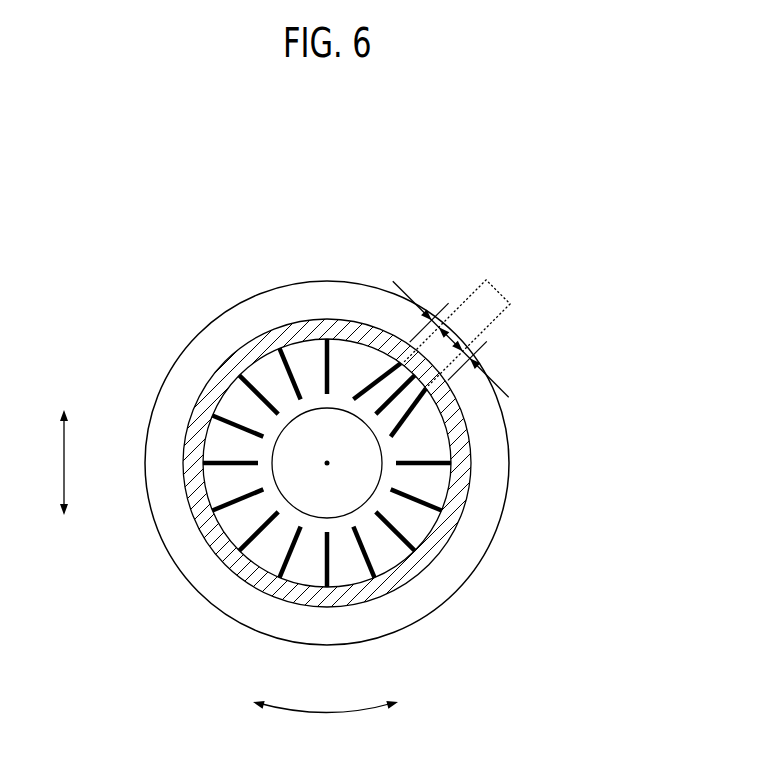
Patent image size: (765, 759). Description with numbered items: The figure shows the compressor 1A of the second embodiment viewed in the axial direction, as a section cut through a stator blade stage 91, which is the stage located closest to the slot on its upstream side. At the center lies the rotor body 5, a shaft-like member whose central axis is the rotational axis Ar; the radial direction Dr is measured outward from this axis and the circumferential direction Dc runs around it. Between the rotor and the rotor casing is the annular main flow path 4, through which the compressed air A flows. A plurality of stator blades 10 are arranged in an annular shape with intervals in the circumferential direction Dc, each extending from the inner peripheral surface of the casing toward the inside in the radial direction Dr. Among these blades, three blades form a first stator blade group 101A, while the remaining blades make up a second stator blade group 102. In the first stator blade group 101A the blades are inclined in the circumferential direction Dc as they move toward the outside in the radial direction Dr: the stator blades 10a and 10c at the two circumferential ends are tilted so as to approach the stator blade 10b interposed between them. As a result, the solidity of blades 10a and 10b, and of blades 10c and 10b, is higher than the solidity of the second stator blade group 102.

The compressor 1A is at (550, 277).
The main flow path 4 is at (250, 515).
The rotor body 5 is at (353, 482).
The stator blade 10 is at (263, 403).
The stator blade 10a is at (358, 395).
The stator blade 10b is at (392, 396).
The stator blade 10c is at (409, 411).
The stator blade stage 91 is at (512, 332).
The first stator blade group 101A is at (458, 335).
The second stator blade group 102 is at (508, 462).
The compressed air A is at (232, 497).
The rotational axis Ar is at (327, 463).
The radial direction Dr is at (50, 462).
The circumferential direction Dc is at (325, 728).